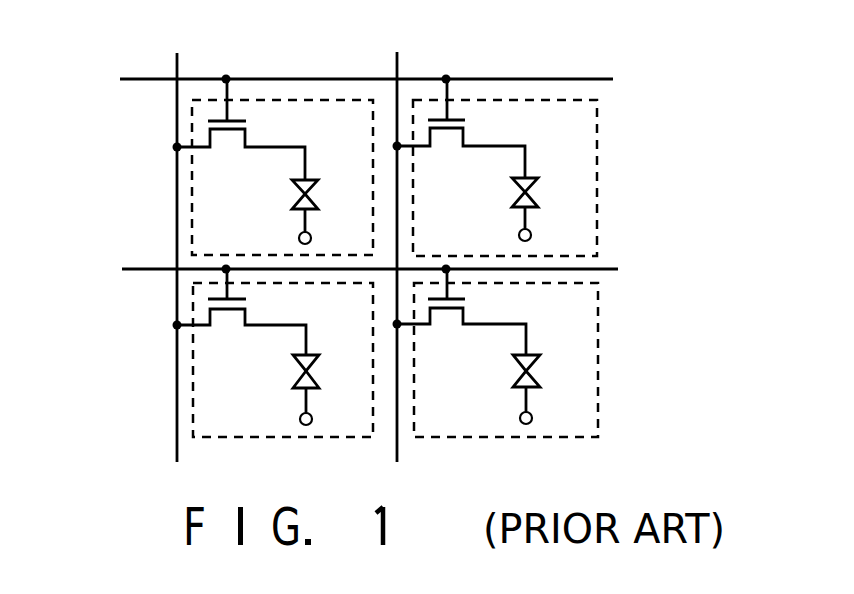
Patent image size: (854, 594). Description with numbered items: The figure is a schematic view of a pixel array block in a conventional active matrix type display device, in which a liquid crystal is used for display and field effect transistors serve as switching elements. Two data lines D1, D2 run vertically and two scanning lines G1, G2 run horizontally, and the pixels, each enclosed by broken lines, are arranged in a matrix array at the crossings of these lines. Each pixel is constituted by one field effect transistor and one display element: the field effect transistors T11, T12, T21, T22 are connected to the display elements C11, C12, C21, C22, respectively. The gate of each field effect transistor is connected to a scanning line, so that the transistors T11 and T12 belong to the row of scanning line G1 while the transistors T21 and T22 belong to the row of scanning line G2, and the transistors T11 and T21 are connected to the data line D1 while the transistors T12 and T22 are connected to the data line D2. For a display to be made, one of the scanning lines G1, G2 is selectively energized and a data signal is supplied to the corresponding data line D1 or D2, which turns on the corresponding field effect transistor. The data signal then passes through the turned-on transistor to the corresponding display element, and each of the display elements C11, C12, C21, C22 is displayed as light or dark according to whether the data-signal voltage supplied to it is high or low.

The data line D1 is at (177, 241).
The data line D2 is at (394, 241).
The scanning line G1 is at (341, 81).
The scanning line G2 is at (346, 271).
The field effect transistor T11 is at (241, 130).
The field effect transistor T12 is at (461, 129).
The field effect transistor T21 is at (241, 314).
The field effect transistor T22 is at (461, 314).
The display element C11 is at (328, 212).
The display element C12 is at (548, 209).
The display element C21 is at (331, 390).
The display element C22 is at (552, 389).